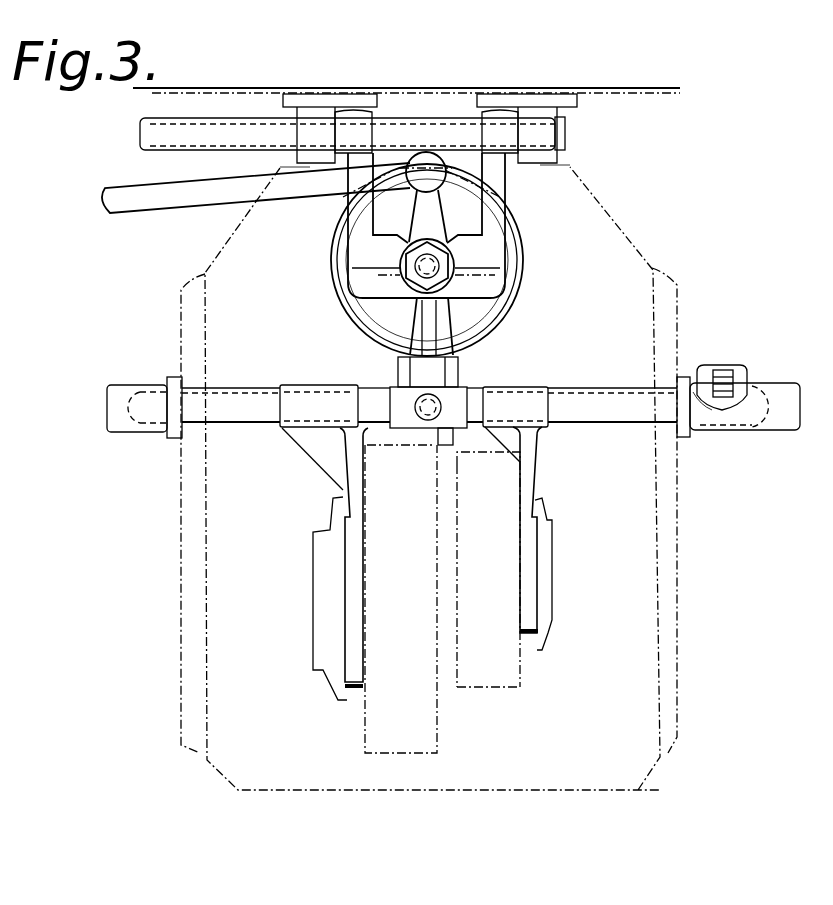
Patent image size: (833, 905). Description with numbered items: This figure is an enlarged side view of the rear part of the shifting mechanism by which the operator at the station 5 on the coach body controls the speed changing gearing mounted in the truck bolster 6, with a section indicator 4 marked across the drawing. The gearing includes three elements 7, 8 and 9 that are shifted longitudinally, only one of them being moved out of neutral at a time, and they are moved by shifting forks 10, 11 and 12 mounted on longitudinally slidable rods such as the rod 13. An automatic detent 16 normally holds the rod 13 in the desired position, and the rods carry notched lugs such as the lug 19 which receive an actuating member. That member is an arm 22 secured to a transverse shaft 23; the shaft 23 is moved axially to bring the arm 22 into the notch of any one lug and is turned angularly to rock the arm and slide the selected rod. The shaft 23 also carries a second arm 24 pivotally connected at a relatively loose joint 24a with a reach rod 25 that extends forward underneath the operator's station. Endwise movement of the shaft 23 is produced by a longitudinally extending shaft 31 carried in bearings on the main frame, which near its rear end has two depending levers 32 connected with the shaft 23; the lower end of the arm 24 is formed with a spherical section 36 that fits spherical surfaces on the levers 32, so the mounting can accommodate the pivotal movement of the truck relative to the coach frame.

The section line 4- 4 is at (277, 349).
The operator's station 5 is at (590, 352).
The truck bolster 6 is at (639, 250).
The gearing element 7 is at (363, 742).
The gearing element 8 is at (465, 452).
The gearing element 9 is at (495, 688).
The shifting fork 10 is at (350, 595).
The shifting fork 11 is at (443, 447).
The shifting fork 12 is at (528, 531).
The longitudinally slidable rod 13 is at (243, 408).
The automatic detent 16 is at (737, 380).
The lug 19 is at (458, 382).
The arm 22 is at (415, 319).
The shaft 23 is at (432, 266).
The second arm 24 is at (433, 217).
The pivotal connection 24a is at (428, 166).
The reach rod 25 is at (152, 200).
The longitudinally extending shaft 31 is at (203, 128).
The depending levers 32 is at (498, 185).
The spherical section 36 is at (488, 312).